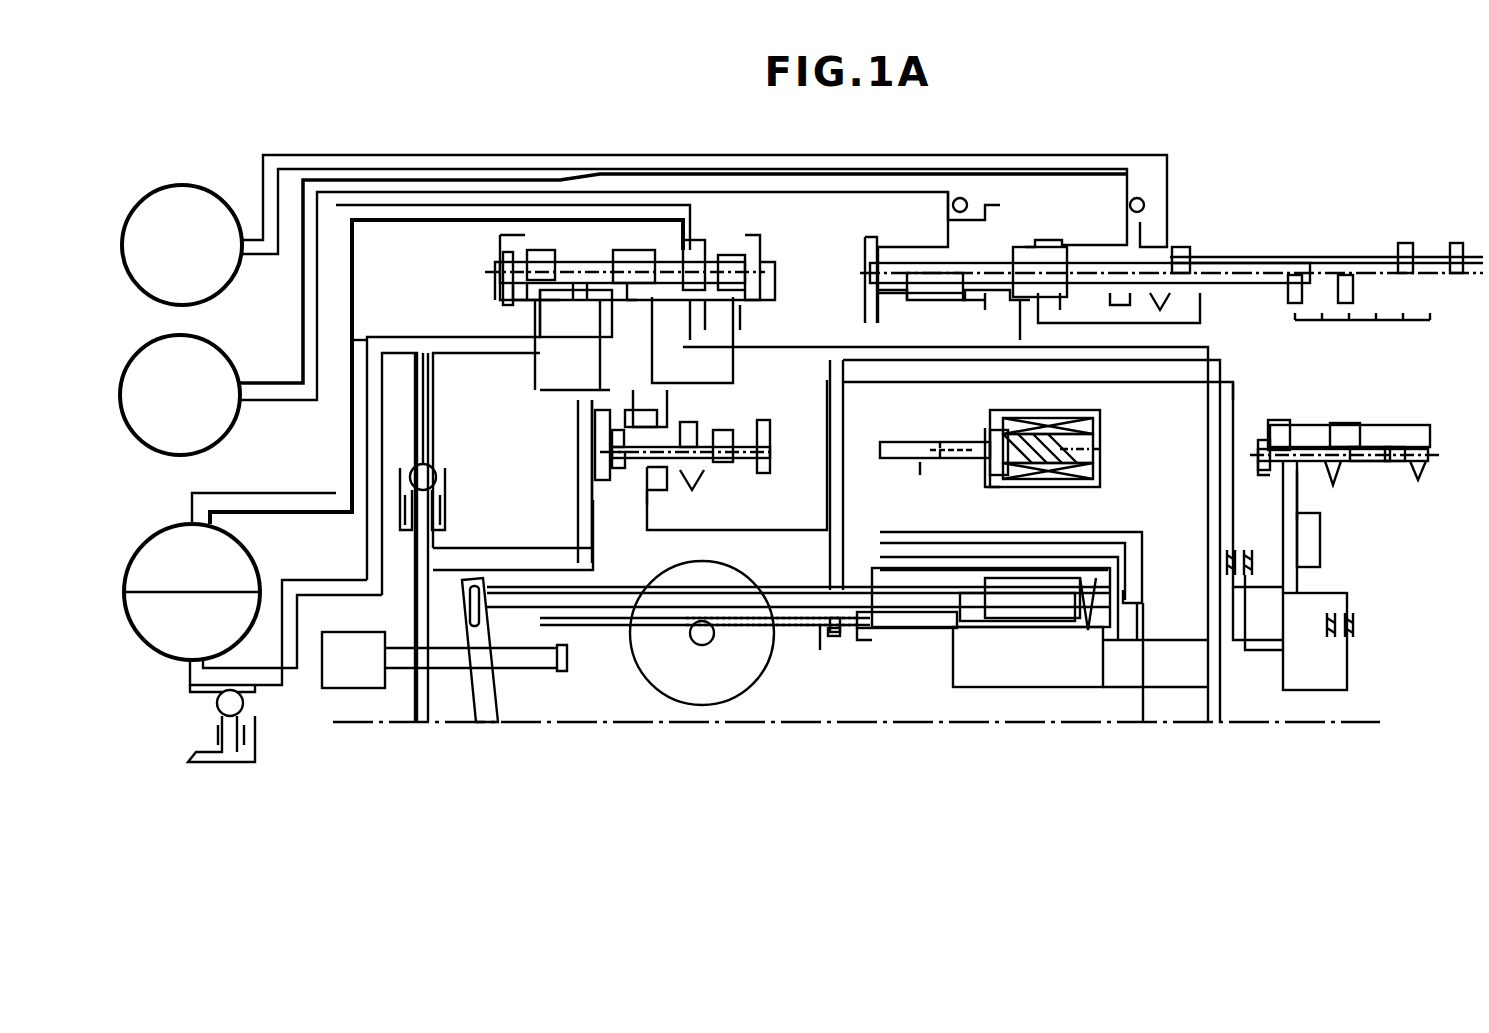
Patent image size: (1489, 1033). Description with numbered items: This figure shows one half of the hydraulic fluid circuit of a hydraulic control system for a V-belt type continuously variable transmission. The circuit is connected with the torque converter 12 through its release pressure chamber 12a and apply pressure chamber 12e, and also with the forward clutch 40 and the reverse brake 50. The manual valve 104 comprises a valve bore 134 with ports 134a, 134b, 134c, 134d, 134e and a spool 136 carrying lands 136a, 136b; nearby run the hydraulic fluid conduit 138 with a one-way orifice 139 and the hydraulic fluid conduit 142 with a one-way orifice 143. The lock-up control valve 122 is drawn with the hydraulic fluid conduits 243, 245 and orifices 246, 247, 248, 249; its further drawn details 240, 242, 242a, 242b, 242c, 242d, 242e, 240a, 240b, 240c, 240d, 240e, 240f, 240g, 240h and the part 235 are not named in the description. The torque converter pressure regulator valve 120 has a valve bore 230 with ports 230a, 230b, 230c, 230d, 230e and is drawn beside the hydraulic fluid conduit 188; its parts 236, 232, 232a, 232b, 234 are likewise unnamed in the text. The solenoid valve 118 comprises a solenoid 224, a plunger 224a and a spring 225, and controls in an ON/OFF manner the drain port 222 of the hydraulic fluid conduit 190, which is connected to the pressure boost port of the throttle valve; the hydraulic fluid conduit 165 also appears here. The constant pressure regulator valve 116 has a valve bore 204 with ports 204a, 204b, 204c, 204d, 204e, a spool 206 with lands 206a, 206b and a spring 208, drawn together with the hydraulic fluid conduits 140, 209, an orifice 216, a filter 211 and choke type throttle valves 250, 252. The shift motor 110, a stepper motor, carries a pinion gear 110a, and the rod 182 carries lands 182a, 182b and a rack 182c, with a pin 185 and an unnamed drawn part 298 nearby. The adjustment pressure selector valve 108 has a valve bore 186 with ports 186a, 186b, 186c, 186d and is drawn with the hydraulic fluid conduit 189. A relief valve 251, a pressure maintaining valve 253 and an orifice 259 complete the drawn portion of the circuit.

The reverse brake 50 is at (226, 208).
The forward clutch 40 is at (235, 350).
The torque converter 12 is at (158, 655).
The release pressure chamber 12a is at (245, 553).
The apply pressure chamber 12e is at (248, 632).
The one-way orifice 139 is at (1140, 198).
The hydraulic fluid conduit 138 is at (1085, 165).
The one-way orifice 143 is at (975, 205).
The hydraulic fluid conduit 142 is at (830, 185).
The manual valve 104 is at (1195, 203).
The lock-up control valve 122 is at (445, 280).
The hydraulic fluid conduit 243 is at (353, 262).
The hydraulic fluid conduit 245 is at (385, 418).
The orifice 247 is at (580, 238).
The shift valve spool 240 is at (722, 232).
The valve land 242 is at (505, 284).
The valve land 242a is at (492, 262).
The valve land 242b is at (570, 262).
The valve land 242c is at (635, 265).
The valve land 242d is at (690, 240).
The valve land 242e is at (748, 258).
The valve port 240a is at (520, 292).
The valve port 240b is at (525, 305).
The valve port 240c is at (576, 310).
The valve port 240d is at (560, 340).
The valve port 240e is at (603, 343).
The valve port 240f is at (760, 288).
The valve port 240g is at (708, 335).
The valve port 240h is at (752, 312).
The orifice 246 is at (535, 335).
The passage 235 is at (650, 322).
The orifice 248 is at (695, 330).
The orifice 249 is at (745, 332).
The valve bore 134 is at (1243, 262).
The port 134a is at (870, 308).
The port 134b is at (985, 312).
The port 134c is at (1010, 350).
The port 134d is at (1125, 302).
The port 134e is at (1191, 310).
The spool 136 is at (1338, 257).
The land 136a is at (1048, 255).
The land 136b is at (1182, 255).
The hydraulic fluid conduit 188 is at (843, 416).
The torque converter pressure regulator valve 120 is at (745, 478).
The valve bore 230 is at (762, 425).
The valve land 236 is at (600, 425).
The valve land 232 is at (612, 455).
The valve land 232a is at (625, 432).
The valve land 232b is at (690, 440).
The valve land 234 is at (750, 445).
The port 230a is at (615, 470).
The port 230b is at (640, 480).
The port 230c is at (662, 470).
The port 230d is at (690, 465).
The port 230e is at (765, 465).
The solenoid 224 is at (1077, 410).
The plunger 224a is at (1024, 428).
The spring 225 is at (1095, 448).
The drain port 222 is at (1000, 475).
The solenoid valve 118 is at (980, 432).
The hydraulic fluid conduit 165 is at (955, 535).
The hydraulic fluid conduit 190 is at (878, 498).
The hydraulic fluid conduit 209 is at (1178, 390).
The valve bore 204 is at (1415, 425).
The spool 206 is at (1425, 430).
The land 206a is at (1290, 420).
The land 206b is at (1368, 415).
The spring 208 is at (1410, 456).
The orifice 216 is at (1262, 428).
The port 204a is at (1262, 465).
The port 204b is at (1288, 500).
The port 204c is at (1310, 505).
The port 204d is at (1345, 490).
The port 204e is at (1425, 480).
The constant pressure regulator valve 116 is at (1395, 470).
The hydraulic fluid conduit 140 is at (1205, 508).
The filter 211 is at (1320, 545).
The choke type throttle valve 250 is at (1225, 568).
The choke type throttle valve 252 is at (1350, 635).
The shift motor 110 is at (640, 676).
The pinion gear 110a is at (712, 645).
The rod 182 is at (598, 618).
The pin 185 is at (482, 612).
The actuator 298 is at (355, 632).
The land 182a is at (830, 632).
The land 182b is at (1003, 620).
The rack 182c is at (820, 650).
The adjustment pressure selector valve 108 is at (905, 630).
The valve bore 186 is at (1030, 568).
The port 186a is at (838, 640).
The port 186b is at (870, 640).
The port 186c is at (965, 628).
The port 186d is at (1085, 630).
The hydraulic fluid conduit 189 is at (985, 687).
The relief valve 251 is at (245, 702).
The pressure maintaining valve 253 is at (437, 472).
The orifice 259 is at (485, 562).